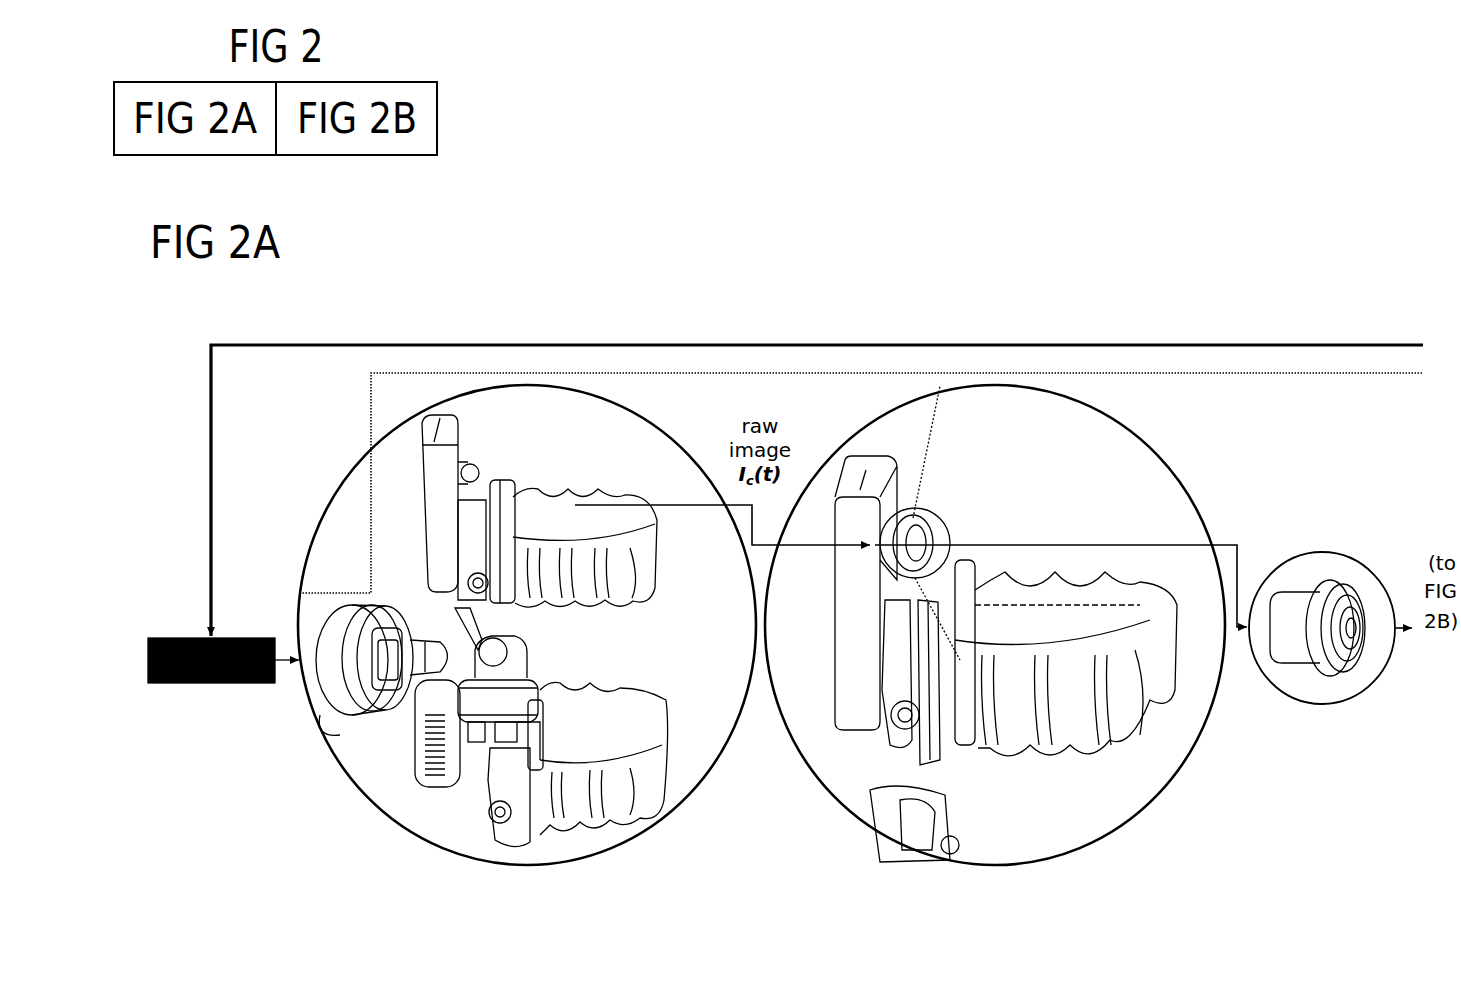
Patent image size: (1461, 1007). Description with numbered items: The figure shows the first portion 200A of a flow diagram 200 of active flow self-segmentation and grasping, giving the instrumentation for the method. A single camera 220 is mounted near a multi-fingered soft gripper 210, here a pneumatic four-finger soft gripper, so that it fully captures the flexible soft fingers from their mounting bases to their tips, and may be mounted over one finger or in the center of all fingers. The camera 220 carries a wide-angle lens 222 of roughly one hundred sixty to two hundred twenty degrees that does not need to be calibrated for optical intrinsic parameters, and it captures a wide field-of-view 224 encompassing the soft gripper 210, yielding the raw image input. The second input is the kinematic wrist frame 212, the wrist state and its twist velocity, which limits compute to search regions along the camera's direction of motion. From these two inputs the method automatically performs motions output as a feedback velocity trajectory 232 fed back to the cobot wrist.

In FIG. 2, the flow diagram 200 is at (1190, 59).
In FIG. 2A, the active flow self-segmentation and grasping system (FIG 2A portion) 200A is at (1345, 249).
In FIG. 2A, the multi-fingered soft gripper 210 is at (527, 666).
In FIG. 2A, the wrist frame 212 is at (874, 483).
In FIG. 2A, the camera 220 is at (412, 418).
In FIG. 2A, the wide-angle lens 222 is at (1330, 675).
In FIG. 2A, the wide field-of-view 224 is at (995, 665).
In FIG. 2A, the velocity trajectory 232 is at (777, 535).